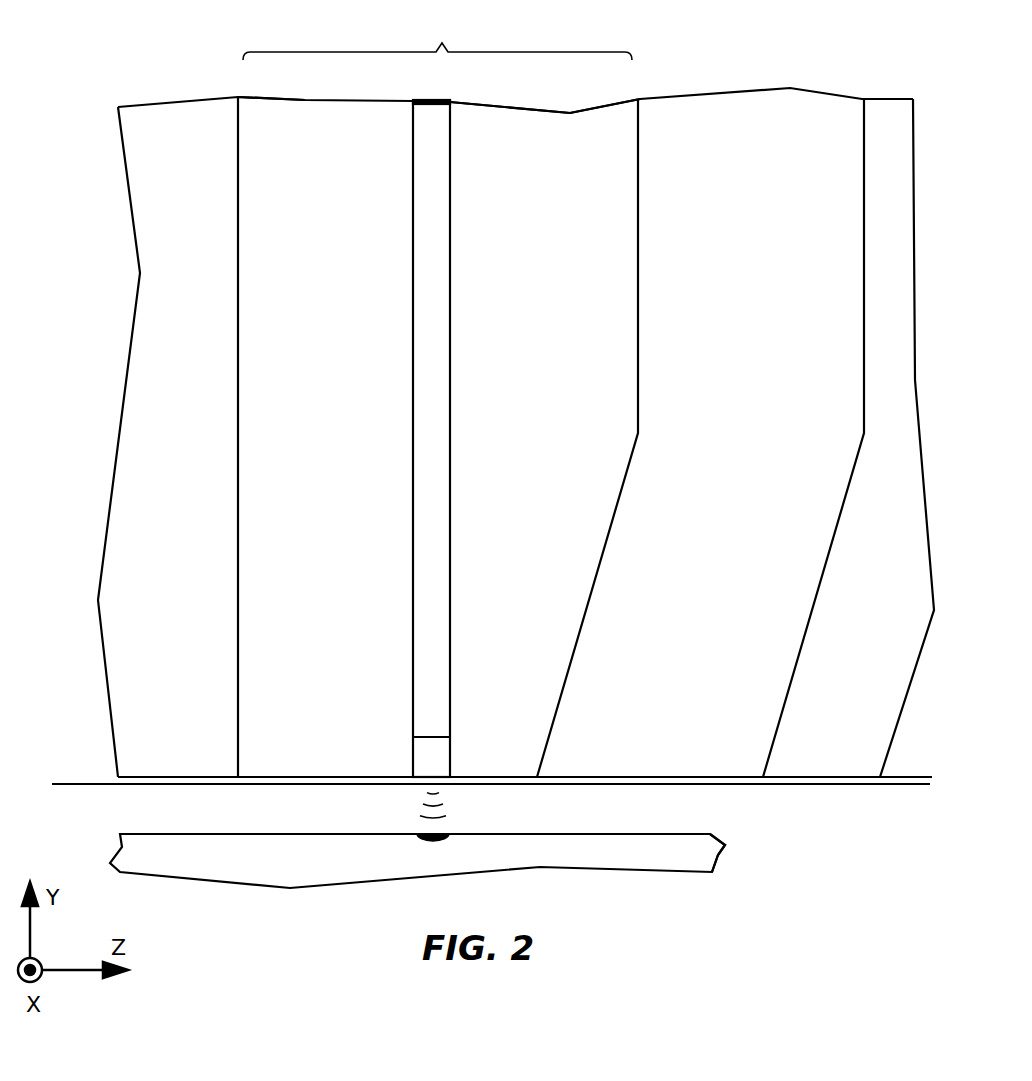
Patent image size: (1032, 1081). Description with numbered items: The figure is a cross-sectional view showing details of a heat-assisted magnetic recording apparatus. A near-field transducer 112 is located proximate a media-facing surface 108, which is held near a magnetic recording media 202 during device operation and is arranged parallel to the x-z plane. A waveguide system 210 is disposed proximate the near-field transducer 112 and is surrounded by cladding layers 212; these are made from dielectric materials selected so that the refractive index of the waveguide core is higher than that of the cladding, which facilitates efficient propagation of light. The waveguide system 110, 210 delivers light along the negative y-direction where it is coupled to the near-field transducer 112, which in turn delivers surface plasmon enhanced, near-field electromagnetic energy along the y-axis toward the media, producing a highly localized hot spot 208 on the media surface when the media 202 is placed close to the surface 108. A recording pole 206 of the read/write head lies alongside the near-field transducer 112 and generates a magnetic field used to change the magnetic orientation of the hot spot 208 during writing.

The media-facing surface 108 is at (820, 785).
The waveguide system 110 is at (437, 35).
The near-field transducer 112 is at (433, 770).
The magnetic recording media 202 is at (181, 857).
The recording pole 206 is at (767, 88).
The hot spot 208 is at (435, 842).
The waveguide system 210 is at (430, 100).
The cladding layer 212 is at (482, 118).